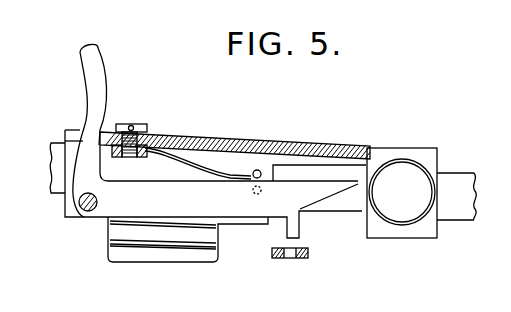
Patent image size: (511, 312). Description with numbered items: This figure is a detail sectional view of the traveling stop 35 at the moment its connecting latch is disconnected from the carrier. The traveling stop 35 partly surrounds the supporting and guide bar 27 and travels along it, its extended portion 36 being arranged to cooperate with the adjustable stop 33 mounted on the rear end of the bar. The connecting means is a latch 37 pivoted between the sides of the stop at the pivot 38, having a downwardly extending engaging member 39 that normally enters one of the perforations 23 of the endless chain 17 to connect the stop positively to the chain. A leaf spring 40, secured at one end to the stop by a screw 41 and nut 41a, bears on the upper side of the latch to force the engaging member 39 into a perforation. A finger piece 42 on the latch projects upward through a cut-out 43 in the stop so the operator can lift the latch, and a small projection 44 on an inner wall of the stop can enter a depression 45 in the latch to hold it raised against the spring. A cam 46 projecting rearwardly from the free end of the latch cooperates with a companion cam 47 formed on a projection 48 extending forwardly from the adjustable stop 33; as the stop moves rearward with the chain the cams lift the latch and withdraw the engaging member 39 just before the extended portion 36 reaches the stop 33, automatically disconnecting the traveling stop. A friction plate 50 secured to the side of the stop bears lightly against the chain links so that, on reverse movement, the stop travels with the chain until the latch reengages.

The chain 17 is at (273, 258).
The perforations 23 is at (289, 258).
The bar 27 is at (456, 196).
The adjustable stop 33 is at (432, 157).
The traveling stop 35 is at (242, 136).
The extended portion 36 is at (351, 162).
The latch 37 is at (208, 184).
The pivot 38 is at (87, 212).
The engaging member 39 is at (283, 231).
The leaf spring 40 is at (220, 172).
The screw 41 is at (134, 131).
The nut 41a is at (118, 148).
The finger piece 42 is at (100, 80).
The cut-out 43 is at (70, 130).
The projection 44 is at (258, 170).
The depression 45 is at (253, 191).
The cam 46 is at (330, 186).
The companion cam 47 is at (330, 186).
The projection 48 is at (362, 210).
The friction plate 50 is at (131, 252).